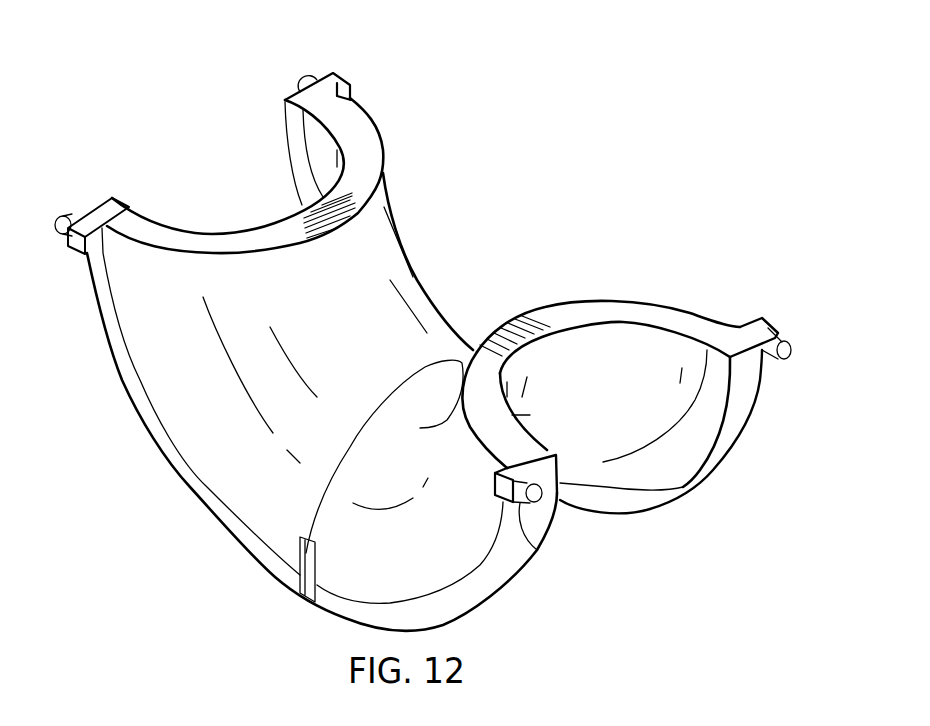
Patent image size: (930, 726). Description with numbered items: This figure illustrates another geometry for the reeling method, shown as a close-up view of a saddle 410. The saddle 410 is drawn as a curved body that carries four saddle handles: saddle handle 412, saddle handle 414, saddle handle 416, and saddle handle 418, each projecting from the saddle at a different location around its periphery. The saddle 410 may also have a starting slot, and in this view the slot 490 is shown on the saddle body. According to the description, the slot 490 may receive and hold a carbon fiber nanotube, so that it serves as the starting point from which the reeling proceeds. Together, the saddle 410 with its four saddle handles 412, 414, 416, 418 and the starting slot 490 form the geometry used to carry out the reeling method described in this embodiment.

The saddle 410 is at (574, 86).
The saddle handle 412 is at (780, 336).
The saddle handle 414 is at (525, 505).
The saddle handle 416 is at (314, 70).
The saddle handle 418 is at (65, 215).
The slot 490 is at (312, 556).